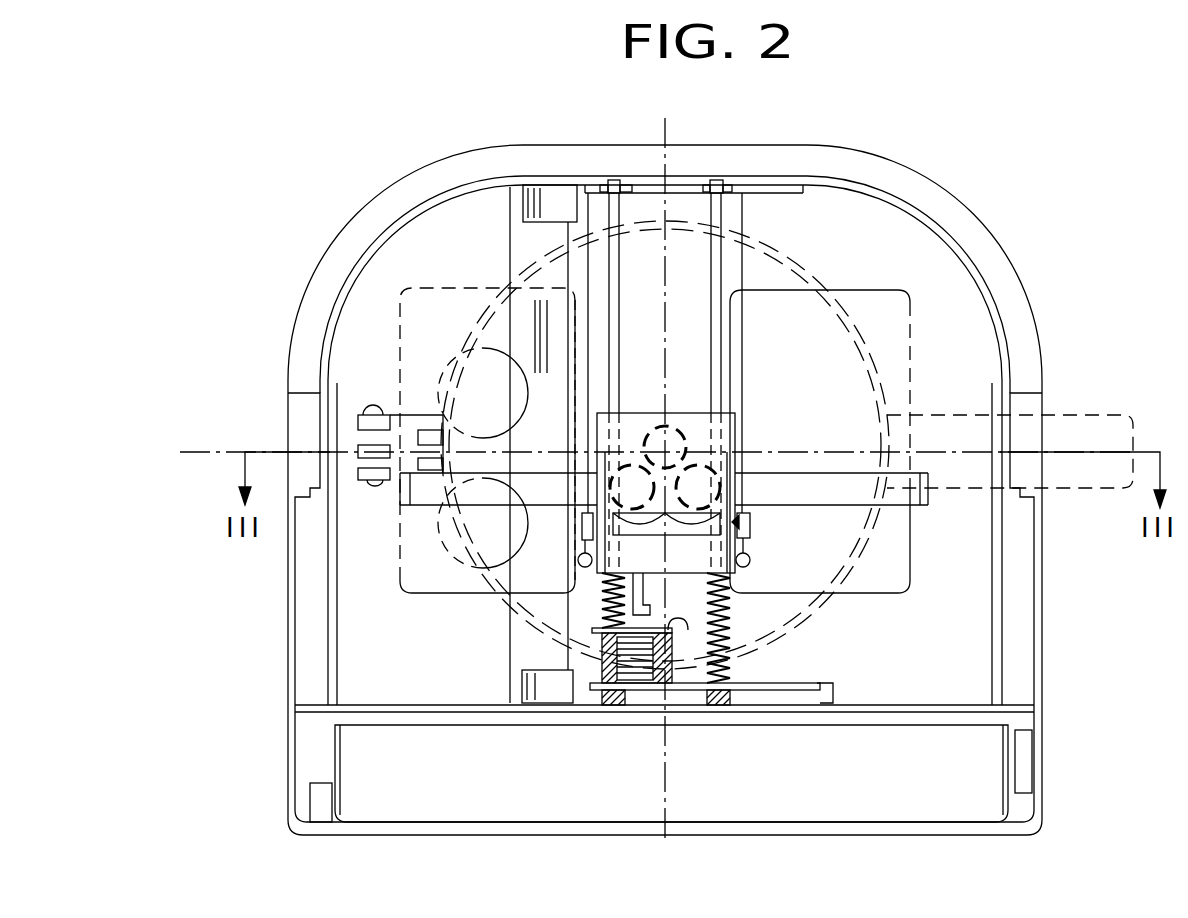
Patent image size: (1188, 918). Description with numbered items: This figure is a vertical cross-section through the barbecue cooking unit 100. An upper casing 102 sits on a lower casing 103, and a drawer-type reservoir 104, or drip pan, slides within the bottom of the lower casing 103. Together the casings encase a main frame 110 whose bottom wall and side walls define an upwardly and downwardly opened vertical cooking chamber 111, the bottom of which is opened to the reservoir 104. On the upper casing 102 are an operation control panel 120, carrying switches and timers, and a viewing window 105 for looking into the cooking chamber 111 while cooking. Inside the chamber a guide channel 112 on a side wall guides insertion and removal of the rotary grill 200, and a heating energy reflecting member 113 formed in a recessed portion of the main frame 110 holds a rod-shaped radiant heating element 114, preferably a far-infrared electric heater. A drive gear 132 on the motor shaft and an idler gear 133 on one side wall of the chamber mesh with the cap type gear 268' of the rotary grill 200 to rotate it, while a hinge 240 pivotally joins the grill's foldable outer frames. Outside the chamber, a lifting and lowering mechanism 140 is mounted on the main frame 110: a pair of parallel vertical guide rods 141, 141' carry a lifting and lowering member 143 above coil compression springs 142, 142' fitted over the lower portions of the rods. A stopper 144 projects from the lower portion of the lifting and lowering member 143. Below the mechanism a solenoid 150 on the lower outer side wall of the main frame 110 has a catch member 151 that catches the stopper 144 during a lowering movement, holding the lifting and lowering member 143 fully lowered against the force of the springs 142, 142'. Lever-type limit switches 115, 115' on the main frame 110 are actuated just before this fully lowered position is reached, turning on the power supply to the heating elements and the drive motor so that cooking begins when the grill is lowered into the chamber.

The cooking unit 100 is at (950, 193).
The upper casing 102 is at (1008, 273).
The lower casing 103 is at (297, 721).
The reservoir 104 is at (333, 758).
The viewing window 105 is at (878, 597).
The main frame 110 is at (1000, 580).
The cooking chamber 111 is at (798, 227).
The guide channel 112 is at (642, 207).
The heating energy reflecting member 113 is at (520, 257).
The radiant heating element 114 is at (542, 238).
The electrical switch 115 is at (510, 588).
The electrical switch 115' is at (786, 537).
The operation control panel 120 is at (400, 553).
The drive gear 132 is at (710, 468).
The idler gear 133 is at (610, 487).
The lifting and lowering mechanism 140 is at (740, 520).
The guide rod 141 is at (512, 617).
The guide rod 141' is at (787, 565).
The coil compression spring 142 is at (576, 669).
The coil compression spring 142' is at (774, 670).
The lifting and lowering member 143 is at (598, 580).
The stopper 144 is at (650, 590).
The solenoid 150 is at (643, 677).
The catch member 151 is at (677, 623).
The rotary grill 200 is at (815, 287).
The hinge 240 is at (372, 495).
The cap type gear 268' is at (731, 414).